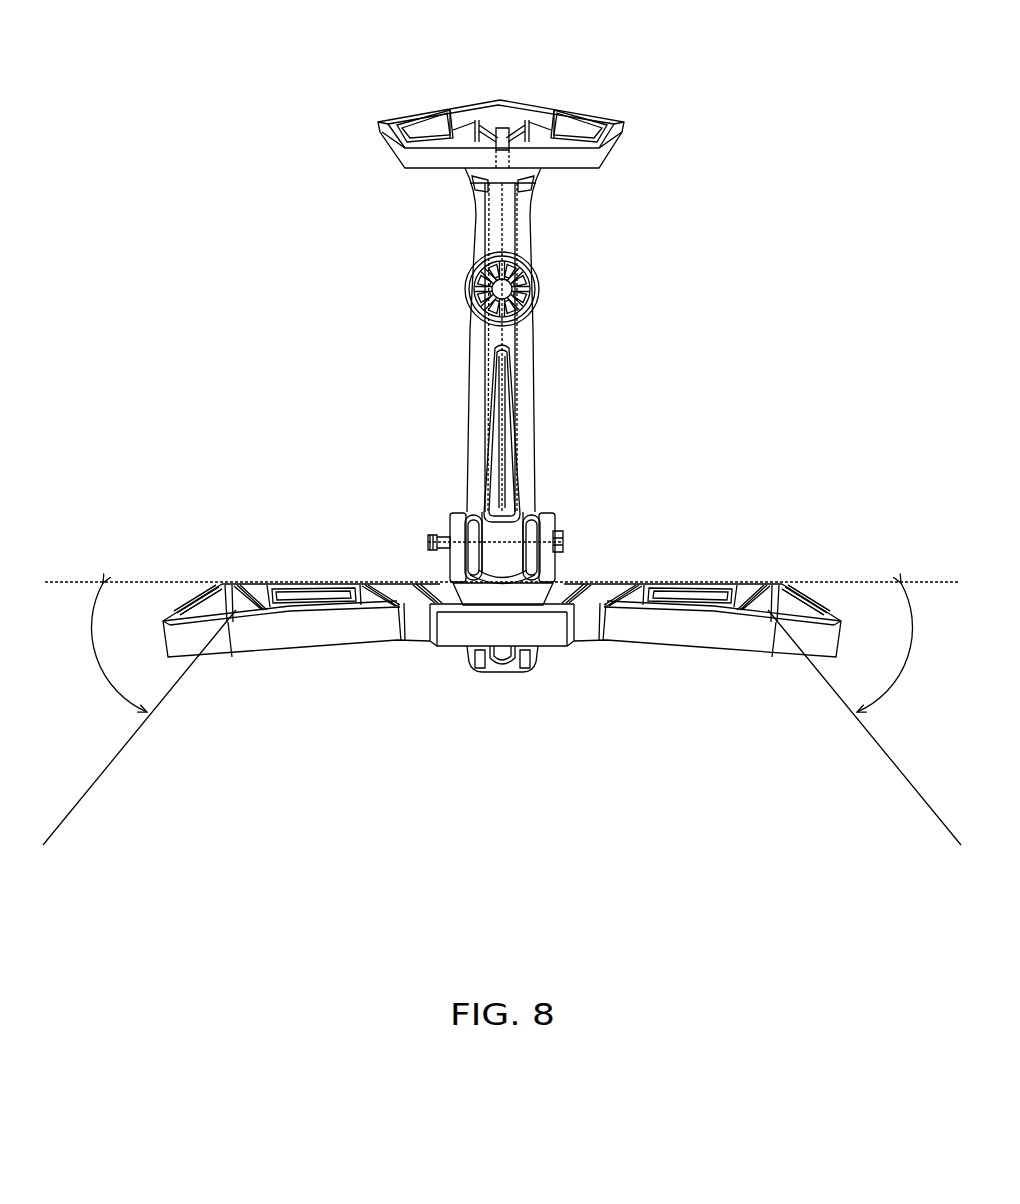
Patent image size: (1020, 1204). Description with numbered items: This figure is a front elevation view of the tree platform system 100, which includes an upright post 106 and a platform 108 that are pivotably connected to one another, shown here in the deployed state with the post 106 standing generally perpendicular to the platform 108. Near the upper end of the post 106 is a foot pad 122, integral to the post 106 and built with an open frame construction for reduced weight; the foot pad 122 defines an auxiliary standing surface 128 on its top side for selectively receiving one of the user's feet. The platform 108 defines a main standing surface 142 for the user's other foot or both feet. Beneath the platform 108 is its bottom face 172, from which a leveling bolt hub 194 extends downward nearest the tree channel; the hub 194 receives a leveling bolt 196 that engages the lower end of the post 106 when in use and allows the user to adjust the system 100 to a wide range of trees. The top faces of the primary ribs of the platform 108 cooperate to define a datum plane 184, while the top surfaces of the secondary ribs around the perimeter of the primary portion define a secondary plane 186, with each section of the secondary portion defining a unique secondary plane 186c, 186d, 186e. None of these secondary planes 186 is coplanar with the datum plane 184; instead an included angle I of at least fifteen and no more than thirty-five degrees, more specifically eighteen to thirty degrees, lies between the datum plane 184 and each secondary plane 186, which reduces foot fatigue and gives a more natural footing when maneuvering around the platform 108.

The tree platform system 100 is at (715, 235).
The post 106 is at (537, 385).
The platform 108 is at (506, 625).
The foot pad 122 is at (549, 112).
The auxiliary standing surface 128 is at (548, 108).
The main standing surface 142 is at (286, 615).
The bottom face 172 is at (405, 648).
The datum plane 184 is at (722, 582).
The secondary plane 186 is at (763, 555).
The secondary plane 186c is at (283, 650).
The secondary plane 186d is at (220, 582).
The secondary plane 186e is at (782, 582).
The leveling bolt hub 194 is at (532, 658).
The leveling bolt 196 is at (503, 672).
The included angle I is at (95, 663).